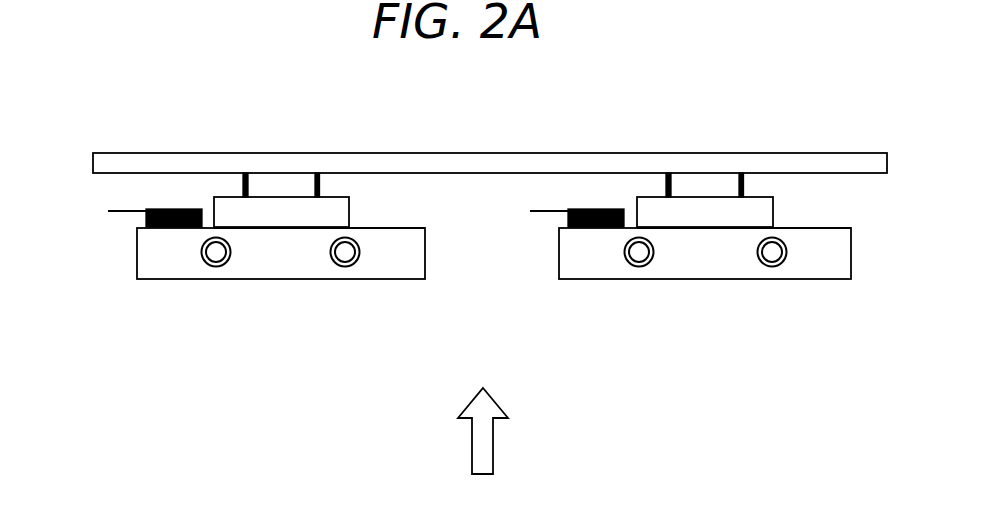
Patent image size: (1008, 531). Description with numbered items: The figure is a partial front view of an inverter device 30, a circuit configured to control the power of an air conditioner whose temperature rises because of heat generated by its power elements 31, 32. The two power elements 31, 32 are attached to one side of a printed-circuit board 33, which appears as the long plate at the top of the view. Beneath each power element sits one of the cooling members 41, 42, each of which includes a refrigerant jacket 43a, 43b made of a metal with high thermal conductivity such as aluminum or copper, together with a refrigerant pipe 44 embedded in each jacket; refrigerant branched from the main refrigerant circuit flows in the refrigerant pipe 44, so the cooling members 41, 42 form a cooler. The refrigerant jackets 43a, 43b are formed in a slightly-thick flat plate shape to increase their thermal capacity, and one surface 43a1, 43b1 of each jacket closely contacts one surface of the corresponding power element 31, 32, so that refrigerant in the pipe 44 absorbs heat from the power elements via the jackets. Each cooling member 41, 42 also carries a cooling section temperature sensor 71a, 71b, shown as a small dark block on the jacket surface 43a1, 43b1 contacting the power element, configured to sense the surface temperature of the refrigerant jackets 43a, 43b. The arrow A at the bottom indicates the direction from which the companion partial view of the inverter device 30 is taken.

The inverter device 30 is at (802, 98).
The power element 31 is at (291, 197).
The power element 32 is at (696, 197).
The printed-circuit board 33 is at (172, 155).
The cooling member 41 is at (242, 327).
The cooling member 42 is at (665, 328).
The refrigerant jacket 43a is at (137, 270).
The one surface of refrigerant jacket 43a1 is at (365, 228).
The refrigerant jacket 43b is at (559, 270).
The one surface of refrigerant jacket 43b1 is at (792, 228).
The refrigerant pipe 44 is at (216, 266).
The cooling section temperature sensor 71a is at (146, 219).
The cooling section temperature sensor 71b is at (568, 219).
The arrow A is at (478, 431).